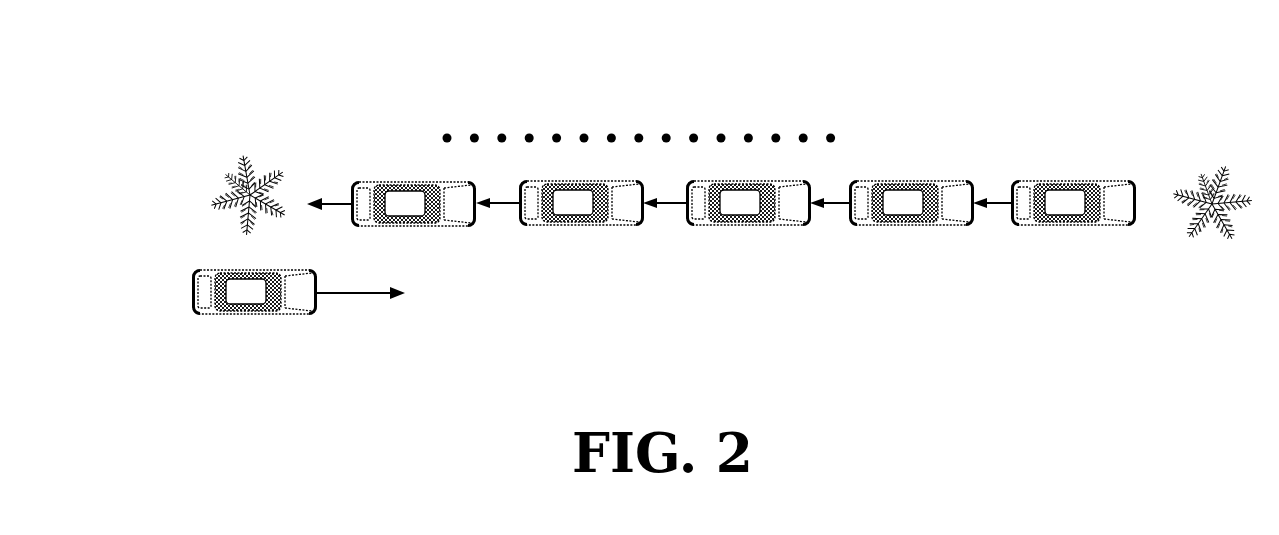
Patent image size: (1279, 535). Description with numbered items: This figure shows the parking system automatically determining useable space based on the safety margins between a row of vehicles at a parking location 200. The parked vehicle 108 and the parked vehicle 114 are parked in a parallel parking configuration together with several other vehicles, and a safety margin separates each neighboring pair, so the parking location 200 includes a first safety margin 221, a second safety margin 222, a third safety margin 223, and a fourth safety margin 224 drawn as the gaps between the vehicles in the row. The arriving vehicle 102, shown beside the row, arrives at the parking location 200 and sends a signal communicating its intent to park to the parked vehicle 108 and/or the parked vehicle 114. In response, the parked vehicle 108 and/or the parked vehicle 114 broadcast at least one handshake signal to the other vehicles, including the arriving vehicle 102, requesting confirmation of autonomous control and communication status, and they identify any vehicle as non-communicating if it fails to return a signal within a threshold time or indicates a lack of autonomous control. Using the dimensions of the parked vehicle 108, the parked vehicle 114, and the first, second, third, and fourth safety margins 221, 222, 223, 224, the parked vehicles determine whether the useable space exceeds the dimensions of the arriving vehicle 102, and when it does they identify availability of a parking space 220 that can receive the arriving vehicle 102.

The parking location 200 is at (226, 66).
The arriving vehicle 102 is at (247, 315).
The parked vehicle 108 is at (400, 184).
The parked vehicle 114 is at (1063, 183).
The parking space 220 is at (1128, 243).
The first safety margin 221 is at (500, 243).
The second safety margin 222 is at (668, 243).
The third safety margin 223 is at (830, 246).
The fourth safety margin 224 is at (995, 244).